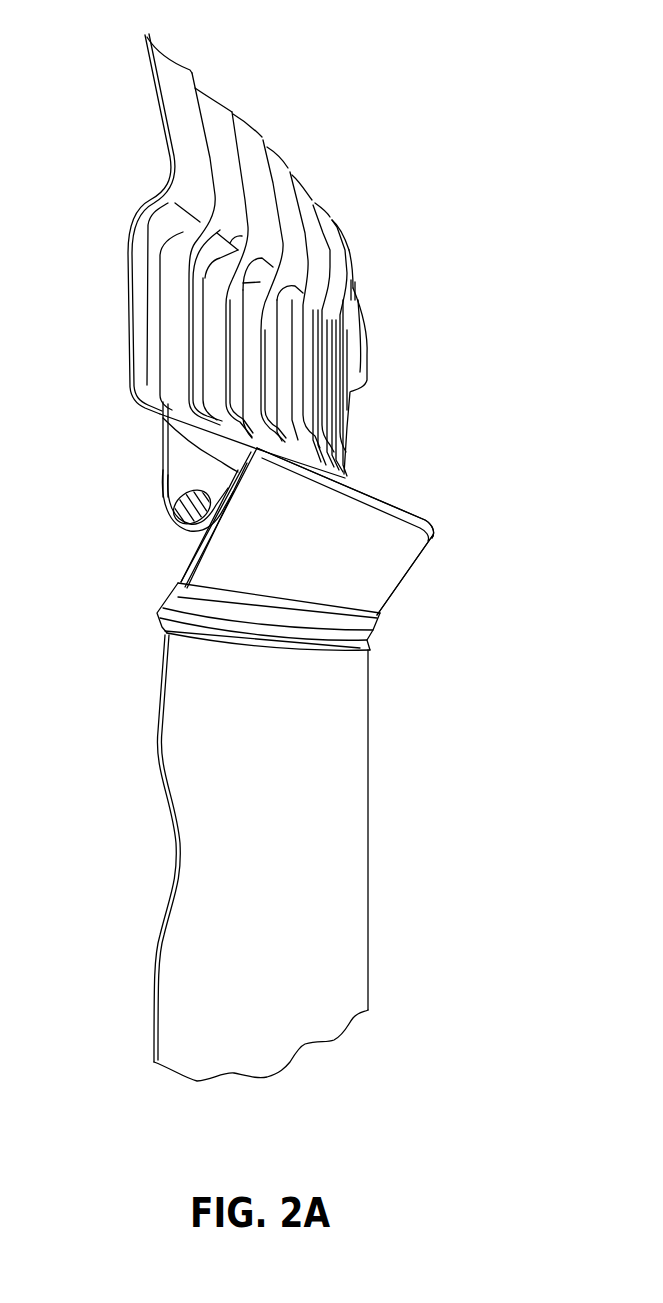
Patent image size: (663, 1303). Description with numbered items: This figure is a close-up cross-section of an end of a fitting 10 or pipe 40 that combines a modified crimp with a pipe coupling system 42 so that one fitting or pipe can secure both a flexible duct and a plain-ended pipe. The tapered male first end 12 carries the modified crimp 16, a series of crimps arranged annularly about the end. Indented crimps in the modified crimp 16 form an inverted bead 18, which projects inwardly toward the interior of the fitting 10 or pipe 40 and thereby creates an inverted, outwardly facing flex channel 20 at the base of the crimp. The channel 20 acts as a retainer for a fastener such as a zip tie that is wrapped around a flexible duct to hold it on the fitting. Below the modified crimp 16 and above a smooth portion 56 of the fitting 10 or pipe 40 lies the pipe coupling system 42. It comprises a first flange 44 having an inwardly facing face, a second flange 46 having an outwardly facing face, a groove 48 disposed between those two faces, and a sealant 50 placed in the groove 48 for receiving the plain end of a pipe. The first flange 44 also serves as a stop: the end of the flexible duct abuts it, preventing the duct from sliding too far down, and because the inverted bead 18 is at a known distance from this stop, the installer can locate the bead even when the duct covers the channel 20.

The fitting 10 is at (418, 101).
The pipe 40 is at (418, 101).
The first end 12 is at (464, 428).
The modified crimp 16 is at (355, 288).
The inverted bead 18 is at (127, 290).
The channel 20 is at (347, 427).
The pipe coupling system 42 is at (444, 508).
The first flange 44 is at (200, 437).
The second flange 46 is at (162, 473).
The groove 48 is at (180, 527).
The sealant 50 is at (182, 510).
The smooth portion 56 is at (372, 813).